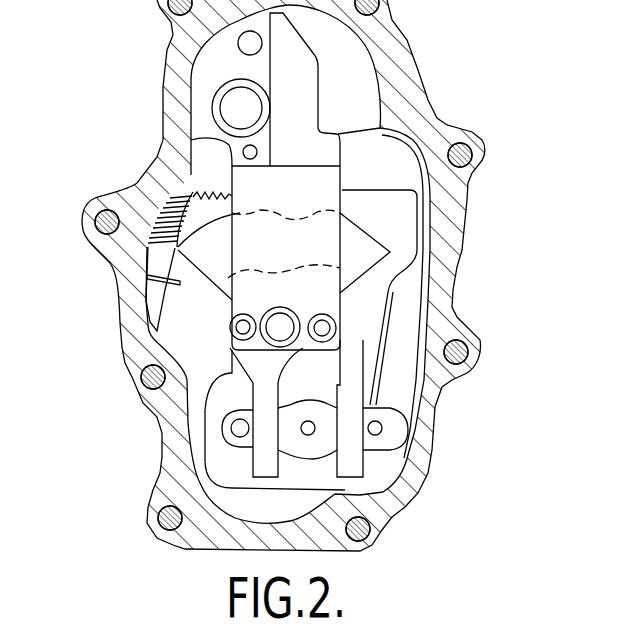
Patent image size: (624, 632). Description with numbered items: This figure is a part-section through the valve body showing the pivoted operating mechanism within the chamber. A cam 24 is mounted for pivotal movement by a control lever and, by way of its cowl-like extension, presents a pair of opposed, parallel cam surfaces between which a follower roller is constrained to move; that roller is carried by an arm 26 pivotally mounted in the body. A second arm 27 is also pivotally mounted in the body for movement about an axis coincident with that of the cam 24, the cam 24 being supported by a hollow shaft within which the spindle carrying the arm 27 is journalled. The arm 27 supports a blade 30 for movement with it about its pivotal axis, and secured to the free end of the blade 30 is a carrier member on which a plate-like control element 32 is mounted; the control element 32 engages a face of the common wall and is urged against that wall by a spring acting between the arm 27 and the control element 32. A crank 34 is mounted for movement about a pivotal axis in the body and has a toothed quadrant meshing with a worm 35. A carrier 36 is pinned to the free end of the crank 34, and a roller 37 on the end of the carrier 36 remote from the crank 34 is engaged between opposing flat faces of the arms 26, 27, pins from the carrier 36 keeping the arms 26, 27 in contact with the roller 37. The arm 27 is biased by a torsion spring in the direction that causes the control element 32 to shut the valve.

The cam 24 is at (360, 258).
The arm 26 is at (355, 373).
The arm 27 is at (265, 378).
The blade 30 is at (250, 282).
The plate-like control element 32 is at (292, 97).
The crank 34 is at (216, 210).
The worm 35 is at (180, 212).
The carrier 36 is at (400, 303).
The roller 37 is at (310, 455).